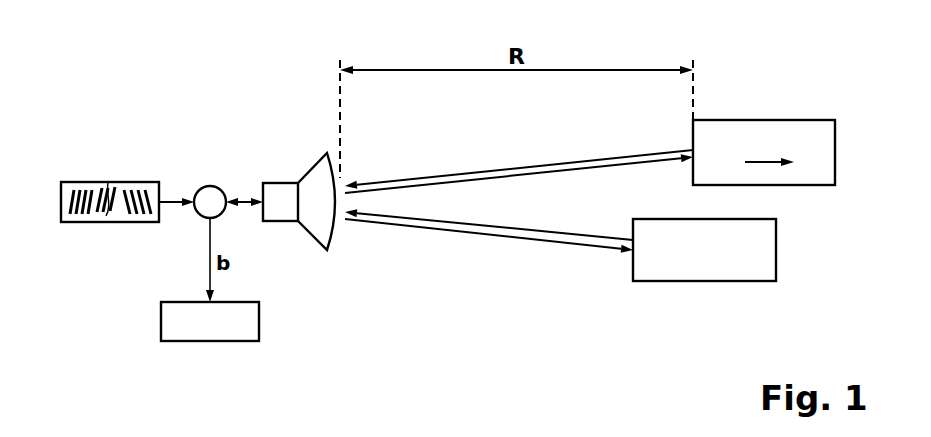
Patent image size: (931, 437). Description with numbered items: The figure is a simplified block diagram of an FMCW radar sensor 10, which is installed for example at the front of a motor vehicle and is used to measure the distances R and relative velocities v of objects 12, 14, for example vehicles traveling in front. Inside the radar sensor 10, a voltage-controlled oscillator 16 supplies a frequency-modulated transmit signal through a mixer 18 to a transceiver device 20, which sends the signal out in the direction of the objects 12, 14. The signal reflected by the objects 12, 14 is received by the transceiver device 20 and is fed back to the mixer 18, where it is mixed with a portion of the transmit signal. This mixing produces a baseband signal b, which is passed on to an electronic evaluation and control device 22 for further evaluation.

The FMCW radar sensor 10 is at (172, 92).
The object 12 is at (773, 120).
The object 14 is at (703, 281).
The voltage-controlled oscillator 16 is at (108, 182).
The mixer 18 is at (210, 186).
The transceiver device 20 is at (279, 183).
The electronic evaluation and control device 22 is at (259, 321).